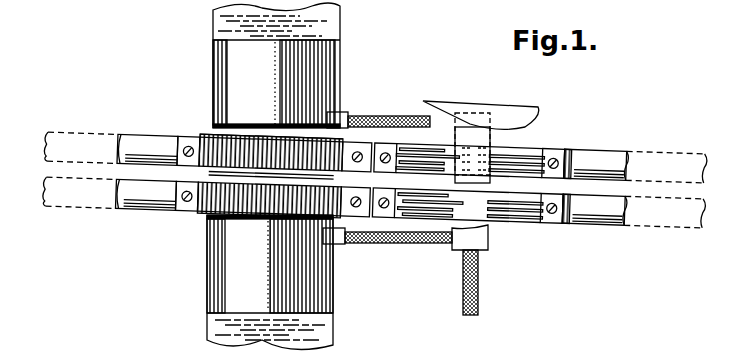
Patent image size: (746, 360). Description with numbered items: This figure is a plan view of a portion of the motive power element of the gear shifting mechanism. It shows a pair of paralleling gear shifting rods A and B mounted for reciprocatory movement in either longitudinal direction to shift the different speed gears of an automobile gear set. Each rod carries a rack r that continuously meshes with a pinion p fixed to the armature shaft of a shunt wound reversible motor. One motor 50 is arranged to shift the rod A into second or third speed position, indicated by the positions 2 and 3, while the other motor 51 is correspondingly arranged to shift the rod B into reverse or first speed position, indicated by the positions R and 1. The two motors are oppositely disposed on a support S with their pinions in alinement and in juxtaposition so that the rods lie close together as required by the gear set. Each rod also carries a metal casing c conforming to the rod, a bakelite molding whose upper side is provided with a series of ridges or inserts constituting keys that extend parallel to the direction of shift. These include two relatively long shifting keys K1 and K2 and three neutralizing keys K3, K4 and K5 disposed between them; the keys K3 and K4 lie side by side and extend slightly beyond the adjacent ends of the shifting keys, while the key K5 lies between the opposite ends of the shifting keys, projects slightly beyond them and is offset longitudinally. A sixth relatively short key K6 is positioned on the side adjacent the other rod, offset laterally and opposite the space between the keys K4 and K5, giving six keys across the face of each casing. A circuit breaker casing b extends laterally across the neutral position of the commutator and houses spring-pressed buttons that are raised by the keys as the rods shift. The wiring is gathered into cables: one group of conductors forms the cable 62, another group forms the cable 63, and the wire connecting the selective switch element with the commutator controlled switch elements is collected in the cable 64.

The first speed position 1 is at (62, 192).
The second speed position 2 is at (63, 147).
The third speed position 3 is at (646, 166).
The reverse position R is at (644, 211).
The gear shifting rod A is at (160, 132).
The gear shifting rod B is at (160, 208).
The rack r is at (204, 130).
The pinion p is at (270, 210).
The circuit breaker casing b is at (492, 141).
The metal casing c is at (544, 135).
The support S is at (336, 27).
The motor 50 is at (276, 65).
The motor 51 is at (270, 282).
The cable 62 is at (404, 245).
The cable 63 is at (372, 119).
The cable 64 is at (479, 284).
The shifting key K1 is at (508, 205).
The shifting key K2 is at (521, 181).
The neutralizing key K3 is at (428, 200).
The neutralizing key K4 is at (430, 162).
The neutralizing key K5 is at (535, 205).
The short key K6 is at (491, 180).